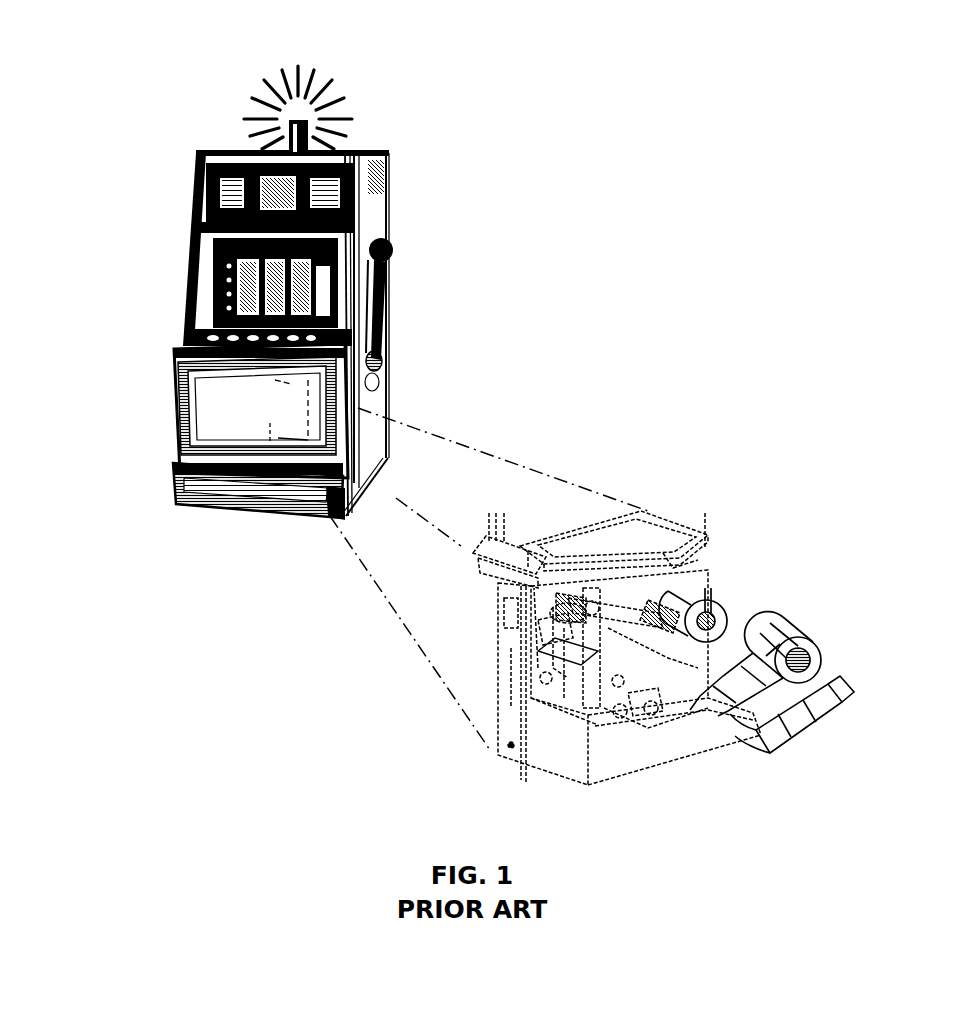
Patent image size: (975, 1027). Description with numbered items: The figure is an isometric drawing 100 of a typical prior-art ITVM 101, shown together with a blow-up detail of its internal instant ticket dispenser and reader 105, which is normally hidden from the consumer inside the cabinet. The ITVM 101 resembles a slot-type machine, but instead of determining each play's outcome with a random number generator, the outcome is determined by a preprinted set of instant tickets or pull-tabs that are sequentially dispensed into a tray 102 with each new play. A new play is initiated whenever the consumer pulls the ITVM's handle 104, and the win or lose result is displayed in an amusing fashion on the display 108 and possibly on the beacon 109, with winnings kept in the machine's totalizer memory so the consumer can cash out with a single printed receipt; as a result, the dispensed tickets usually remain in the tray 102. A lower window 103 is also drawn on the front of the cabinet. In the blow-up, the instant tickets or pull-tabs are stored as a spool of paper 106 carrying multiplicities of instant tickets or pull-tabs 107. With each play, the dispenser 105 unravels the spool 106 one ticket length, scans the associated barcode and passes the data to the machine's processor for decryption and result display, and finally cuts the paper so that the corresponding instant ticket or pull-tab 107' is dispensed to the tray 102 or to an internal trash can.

The isometric drawing 100 is at (138, 67).
The ITVM 101 is at (400, 173).
The tray 102 is at (163, 454).
The lower display window 103 is at (245, 391).
The handle 104 is at (395, 233).
The instant ticket dispenser and reader 105 is at (511, 771).
The spool of paper 106 is at (720, 583).
The instant tickets or pull-tabs 107 is at (782, 711).
The dispensed instant ticket or pull-tab 107' is at (600, 727).
The display 108 is at (178, 226).
The beacon 109 is at (349, 83).